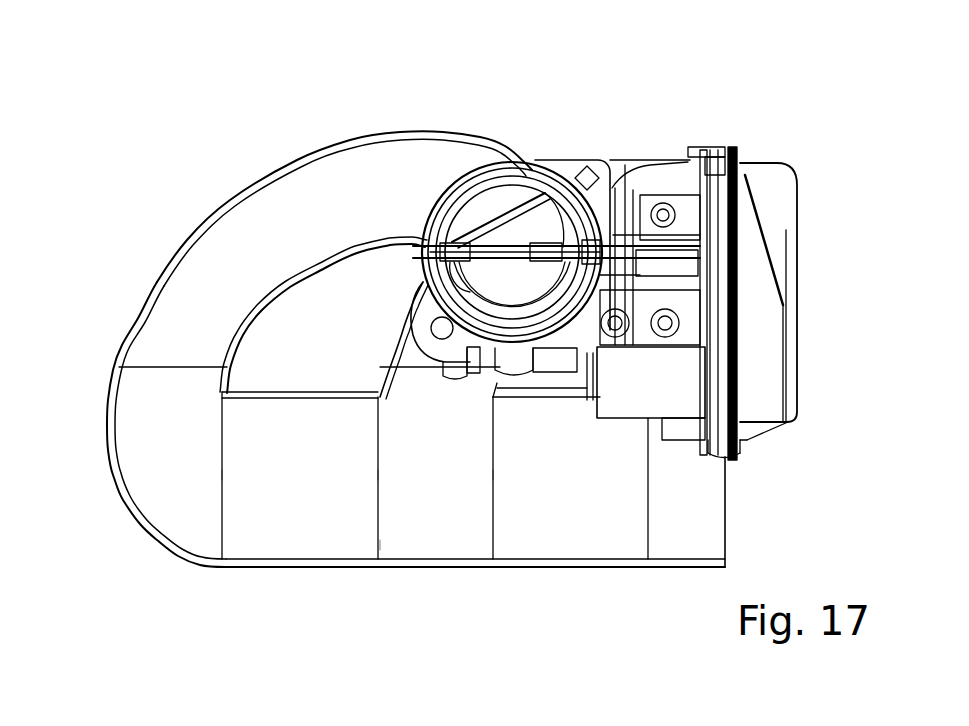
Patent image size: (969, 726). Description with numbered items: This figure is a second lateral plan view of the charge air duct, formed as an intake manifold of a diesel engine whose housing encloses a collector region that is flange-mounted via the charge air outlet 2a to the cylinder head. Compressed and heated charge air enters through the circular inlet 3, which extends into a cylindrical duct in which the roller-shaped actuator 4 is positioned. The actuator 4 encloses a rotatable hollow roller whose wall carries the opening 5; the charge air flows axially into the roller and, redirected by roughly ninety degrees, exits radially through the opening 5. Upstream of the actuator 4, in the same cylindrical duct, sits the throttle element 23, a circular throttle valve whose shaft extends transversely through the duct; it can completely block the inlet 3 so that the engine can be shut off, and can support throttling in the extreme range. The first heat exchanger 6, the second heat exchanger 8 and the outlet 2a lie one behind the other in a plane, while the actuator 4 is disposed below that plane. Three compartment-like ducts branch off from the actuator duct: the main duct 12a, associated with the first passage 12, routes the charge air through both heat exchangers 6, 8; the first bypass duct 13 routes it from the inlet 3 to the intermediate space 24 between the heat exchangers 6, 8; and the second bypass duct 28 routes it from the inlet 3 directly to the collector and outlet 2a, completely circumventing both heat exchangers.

The charge air outlet 2a is at (733, 502).
The inlet 3 is at (488, 215).
The actuator 4 is at (528, 183).
The opening 5 is at (335, 233).
The first passage 12 is at (335, 233).
The main duct 12a is at (250, 252).
The throttle element 23 is at (540, 247).
The first heat exchanger 6 is at (262, 494).
The second heat exchanger 8 is at (531, 485).
The first bypass duct 13 is at (438, 380).
The intermediate space 24 is at (438, 517).
The second bypass duct 28 is at (583, 337).